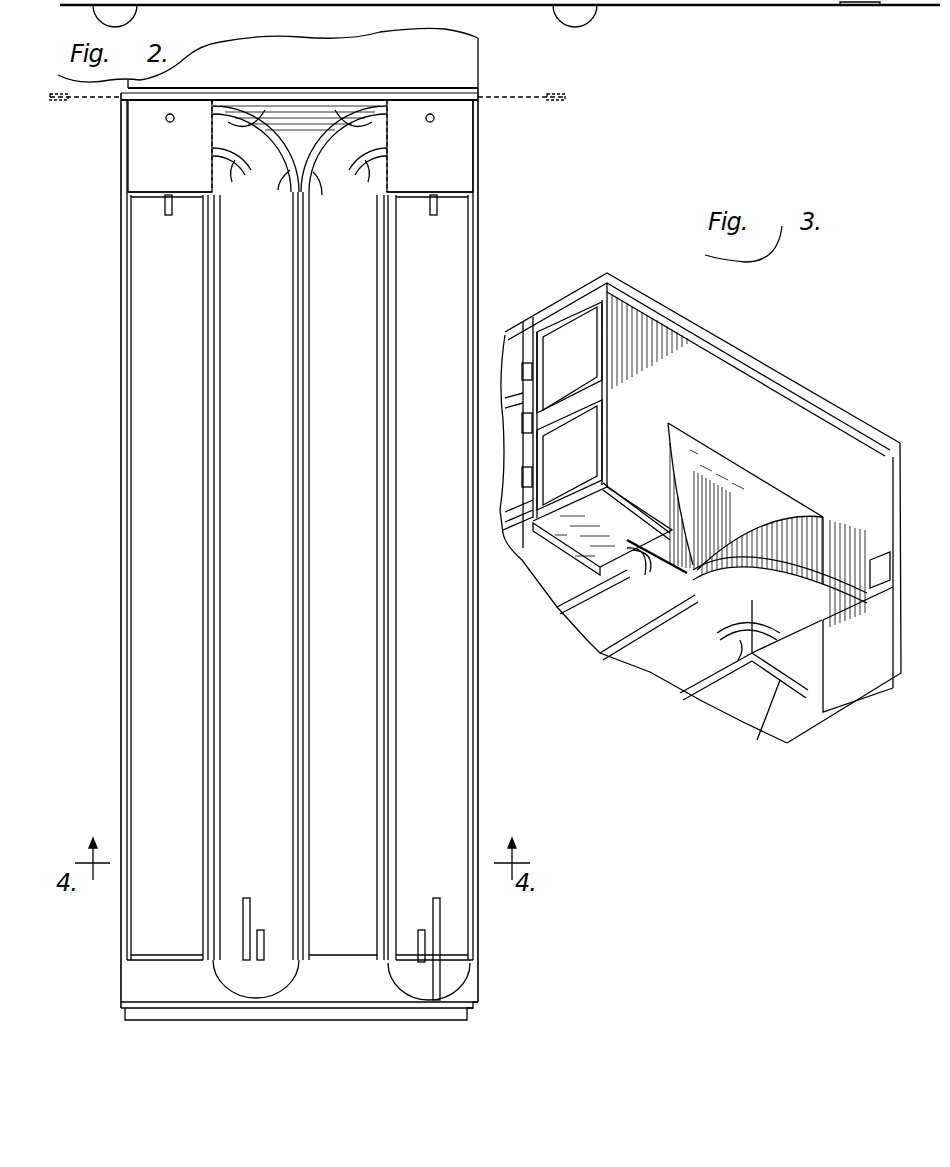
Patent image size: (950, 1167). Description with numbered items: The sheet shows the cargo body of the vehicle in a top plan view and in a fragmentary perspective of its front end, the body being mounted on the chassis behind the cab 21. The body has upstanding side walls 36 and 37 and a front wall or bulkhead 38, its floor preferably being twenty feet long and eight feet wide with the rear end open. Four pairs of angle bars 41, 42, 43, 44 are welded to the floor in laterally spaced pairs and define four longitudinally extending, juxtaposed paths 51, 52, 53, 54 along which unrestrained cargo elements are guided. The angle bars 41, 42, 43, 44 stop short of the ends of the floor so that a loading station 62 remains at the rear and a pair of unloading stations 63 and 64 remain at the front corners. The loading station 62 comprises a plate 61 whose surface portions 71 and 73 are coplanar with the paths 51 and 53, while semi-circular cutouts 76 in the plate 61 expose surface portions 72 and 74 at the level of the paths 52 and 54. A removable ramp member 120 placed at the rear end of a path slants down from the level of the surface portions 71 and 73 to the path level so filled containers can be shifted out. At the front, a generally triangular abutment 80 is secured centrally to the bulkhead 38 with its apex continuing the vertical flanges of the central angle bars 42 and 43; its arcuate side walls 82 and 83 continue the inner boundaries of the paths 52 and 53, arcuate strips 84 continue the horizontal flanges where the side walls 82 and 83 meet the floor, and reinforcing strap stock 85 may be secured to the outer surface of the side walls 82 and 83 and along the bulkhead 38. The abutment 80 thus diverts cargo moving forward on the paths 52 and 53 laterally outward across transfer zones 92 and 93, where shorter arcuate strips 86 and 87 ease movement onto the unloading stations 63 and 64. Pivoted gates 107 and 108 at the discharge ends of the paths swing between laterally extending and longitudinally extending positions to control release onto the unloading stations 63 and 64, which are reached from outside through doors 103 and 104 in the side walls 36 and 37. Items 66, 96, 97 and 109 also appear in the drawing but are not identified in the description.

In FIG. 2, the cab 21 is at (478, 50).
In FIG. 2, the side wall 36 is at (120, 467).
In FIG. 3, the side wall 36 is at (505, 345).
In FIG. 2, the side wall 37 is at (478, 718).
In FIG. 3, the side wall 37 is at (810, 718).
In FIG. 2, the front wall or bulkhead 38 is at (330, 100).
In FIG. 3, the front wall or bulkhead 38 is at (748, 418).
In FIG. 2, the angle bar 41 is at (135, 648).
In FIG. 3, the angle bar 41 is at (522, 560).
In FIG. 2, the angle bar 42 is at (223, 662).
In FIG. 3, the angle bar 42 is at (555, 610).
In FIG. 2, the angle bar 43 is at (312, 668).
In FIG. 3, the angle bar 43 is at (640, 662).
In FIG. 2, the angle bar 44 is at (400, 678).
In FIG. 3, the angle bar 44 is at (715, 700).
In FIG. 2, the path 51 is at (178, 539).
In FIG. 3, the path 51 is at (552, 573).
In FIG. 2, the path 52 is at (271, 554).
In FIG. 3, the path 52 is at (644, 615).
In FIG. 2, the path 53 is at (358, 554).
In FIG. 3, the path 53 is at (689, 668).
In FIG. 2, the path 54 is at (445, 559).
In FIG. 3, the path 54 is at (754, 708).
In FIG. 2, the plate 61 is at (128, 965).
In FIG. 2, the loading station 62 is at (120, 1005).
In FIG. 2, the unloading station 63 is at (165, 150).
In FIG. 3, the unloading station 63 is at (621, 531).
In FIG. 2, the unloading station 64 is at (463, 155).
In FIG. 3, the unloading station 64 is at (821, 668).
In FIG. 3, the guide 66 is at (628, 572).
In FIG. 2, the surface portion 71 is at (178, 981).
In FIG. 2, the surface portion 72 is at (277, 981).
In FIG. 2, the surface portion 73 is at (335, 981).
In FIG. 2, the surface portion 74 is at (460, 988).
In FIG. 2, the semi-circular cutout 76 is at (225, 978).
In FIG. 2, the abutment 80 is at (285, 108).
In FIG. 3, the abutment 80 is at (740, 499).
In FIG. 2, the side wall 82 is at (248, 162).
In FIG. 3, the side wall 82 is at (668, 432).
In FIG. 2, the side wall 83 is at (353, 160).
In FIG. 3, the side wall 83 is at (820, 530).
In FIG. 2, the arcuate strip 84 is at (228, 122).
In FIG. 3, the arcuate strip 84 is at (712, 594).
In FIG. 3, the reinforcing strap stock 85 is at (688, 505).
In FIG. 2, the arcuate strip 86 is at (237, 182).
In FIG. 2, the arcuate strip 87 is at (358, 190).
In FIG. 3, the arcuate strip 87 is at (720, 650).
In FIG. 2, the transfer zone 92 is at (258, 149).
In FIG. 3, the transfer zone 92 is at (679, 595).
In FIG. 2, the transfer zone 93 is at (373, 149).
In FIG. 3, the transfer zone 93 is at (795, 620).
In FIG. 2, the guide 96 is at (271, 188).
In FIG. 2, the guide 97 is at (325, 196).
In FIG. 2, the door 103 is at (62, 100).
In FIG. 3, the door 103 is at (584, 361).
In FIG. 2, the door 104 is at (550, 100).
In FIG. 3, the door 104 is at (880, 671).
In FIG. 2, the gate 107 is at (225, 100).
In FIG. 3, the gate 107 is at (583, 597).
In FIG. 2, the gate 108 is at (393, 130).
In FIG. 3, the gate 108 is at (780, 700).
In FIG. 2, the pin 109 is at (208, 197).
In FIG. 2, the ramp member 120 is at (422, 984).